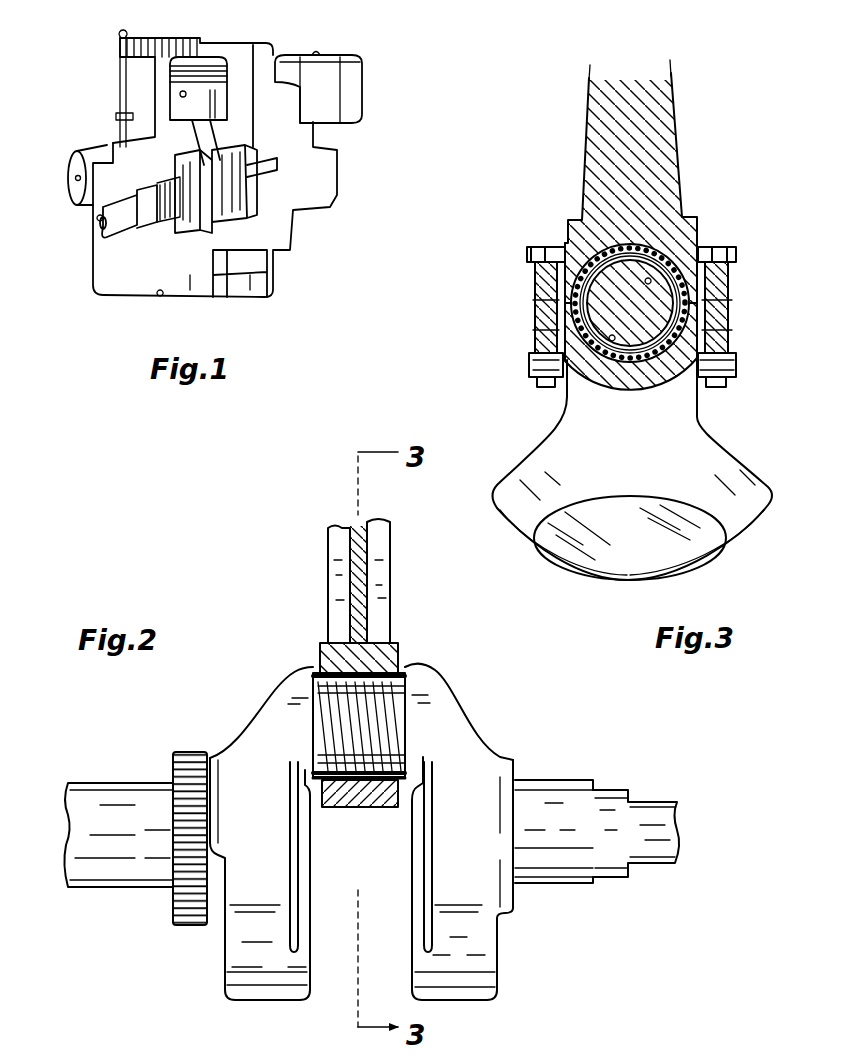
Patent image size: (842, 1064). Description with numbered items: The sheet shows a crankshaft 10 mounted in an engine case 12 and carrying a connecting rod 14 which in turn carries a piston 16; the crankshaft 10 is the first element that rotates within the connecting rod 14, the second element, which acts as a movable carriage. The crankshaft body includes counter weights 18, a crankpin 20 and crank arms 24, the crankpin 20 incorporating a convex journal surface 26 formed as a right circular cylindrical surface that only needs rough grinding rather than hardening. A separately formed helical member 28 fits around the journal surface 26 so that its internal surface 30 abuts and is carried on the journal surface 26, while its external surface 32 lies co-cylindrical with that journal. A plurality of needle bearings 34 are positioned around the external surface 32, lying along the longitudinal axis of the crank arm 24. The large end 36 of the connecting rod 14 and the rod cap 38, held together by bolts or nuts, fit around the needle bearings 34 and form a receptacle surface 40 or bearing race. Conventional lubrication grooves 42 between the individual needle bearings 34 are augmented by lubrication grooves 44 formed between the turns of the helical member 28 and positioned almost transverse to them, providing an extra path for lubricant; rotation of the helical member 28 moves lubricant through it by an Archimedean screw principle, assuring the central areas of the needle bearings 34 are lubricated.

In FIG. 1, the crankshaft 10 is at (258, 155).
In FIG. 2, the crankshaft 10 is at (572, 790).
In FIG. 1, the engine case 12 is at (255, 47).
In FIG. 1, the connecting rod 14 is at (207, 138).
In FIG. 3, the connecting rod 14 is at (660, 142).
In FIG. 2, the connecting rod 14 is at (375, 572).
In FIG. 1, the piston 16 is at (172, 93).
In FIG. 1, the counter weights 18 is at (183, 232).
In FIG. 2, the counter weights 18 is at (233, 957).
In FIG. 3, the crankpin 20 is at (633, 282).
In FIG. 2, the crankpin 20 is at (397, 740).
In FIG. 2, the crank arm 24 is at (418, 695).
In FIG. 3, the journal surface 26 is at (612, 375).
In FIG. 2, the journal surface 26 is at (318, 715).
In FIG. 3, the helical member 28 is at (655, 365).
In FIG. 2, the helical member 28 is at (400, 752).
In FIG. 3, the internal surface 30 is at (570, 360).
In FIG. 3, the external surface 32 is at (653, 282).
In FIG. 2, the external surface 32 is at (340, 807).
In FIG. 3, the needle bearings 34 is at (688, 294).
In FIG. 2, the needle bearings 34 is at (372, 672).
In FIG. 3, the large end 36 is at (592, 232).
In FIG. 2, the large end 36 is at (372, 655).
In FIG. 3, the rod cap 38 is at (700, 370).
In FIG. 2, the rod cap 38 is at (347, 812).
In FIG. 3, the receptacle surface 40 is at (566, 233).
In FIG. 2, the receptacle surface 40 is at (330, 655).
In FIG. 3, the lubrication grooves 42 is at (536, 298).
In FIG. 2, the lubrication grooves 42 is at (312, 675).
In FIG. 2, the lubrication grooves 44 is at (293, 773).